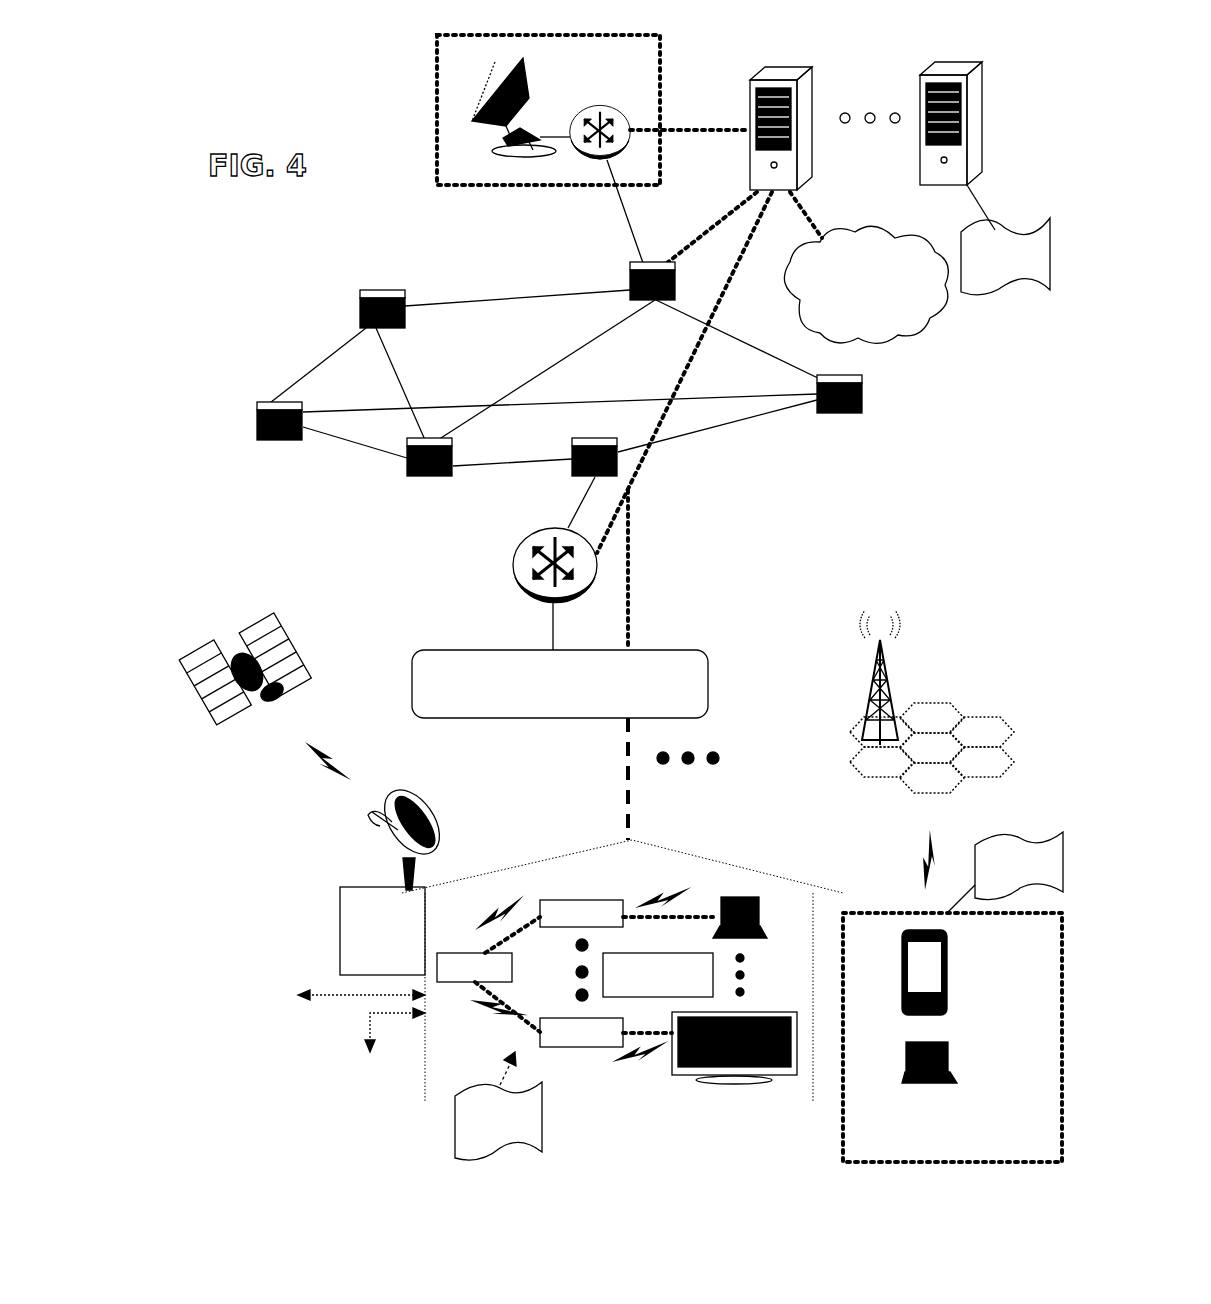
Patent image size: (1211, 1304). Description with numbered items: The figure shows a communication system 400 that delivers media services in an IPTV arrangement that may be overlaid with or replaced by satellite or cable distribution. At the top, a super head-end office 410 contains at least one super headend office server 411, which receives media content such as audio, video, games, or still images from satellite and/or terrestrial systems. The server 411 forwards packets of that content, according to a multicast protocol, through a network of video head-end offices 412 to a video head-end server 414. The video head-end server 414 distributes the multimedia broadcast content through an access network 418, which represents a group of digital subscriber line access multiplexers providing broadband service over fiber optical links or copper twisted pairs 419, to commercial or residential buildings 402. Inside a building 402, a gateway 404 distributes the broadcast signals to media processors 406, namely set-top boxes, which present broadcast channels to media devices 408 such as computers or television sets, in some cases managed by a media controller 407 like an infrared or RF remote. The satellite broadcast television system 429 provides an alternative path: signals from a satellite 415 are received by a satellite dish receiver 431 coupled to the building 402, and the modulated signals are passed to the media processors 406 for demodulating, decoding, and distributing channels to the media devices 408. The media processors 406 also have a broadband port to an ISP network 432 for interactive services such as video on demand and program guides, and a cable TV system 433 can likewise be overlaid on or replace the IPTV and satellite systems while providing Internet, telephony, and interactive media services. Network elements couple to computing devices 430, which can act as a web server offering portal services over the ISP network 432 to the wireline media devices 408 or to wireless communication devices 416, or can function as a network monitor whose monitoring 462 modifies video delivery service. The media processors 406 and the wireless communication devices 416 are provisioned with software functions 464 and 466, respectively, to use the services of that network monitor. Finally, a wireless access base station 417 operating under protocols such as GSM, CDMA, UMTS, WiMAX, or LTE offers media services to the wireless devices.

The communication system 400 is at (272, 134).
The buildings 402 is at (639, 1123).
The gateway 404 is at (474, 967).
The media processors 406 is at (547, 971).
The media controller 407 is at (673, 975).
The media devices 408 is at (745, 900).
The super head-end office 410 is at (433, 118).
The super headend office server 411 is at (575, 110).
The video head-end offices 412 is at (258, 422).
The video head-end server 414 is at (515, 577).
The satellite 415 is at (203, 678).
The wireless communication devices 416 is at (955, 945).
The wireless access base station 417 is at (930, 705).
The access network 418 is at (708, 680).
The fiber optical links or copper twisted pairs 419 is at (628, 810).
The satellite broadcast television system 429 is at (334, 722).
The computing devices 430 is at (955, 60).
The satellite dish receiver 431 is at (326, 887).
The ISP network 432 is at (888, 329).
The cable TV system 433 is at (350, 1119).
The monitoring 462 is at (1027, 267).
The software functions 464 is at (517, 1136).
The software functions 466 is at (1037, 883).